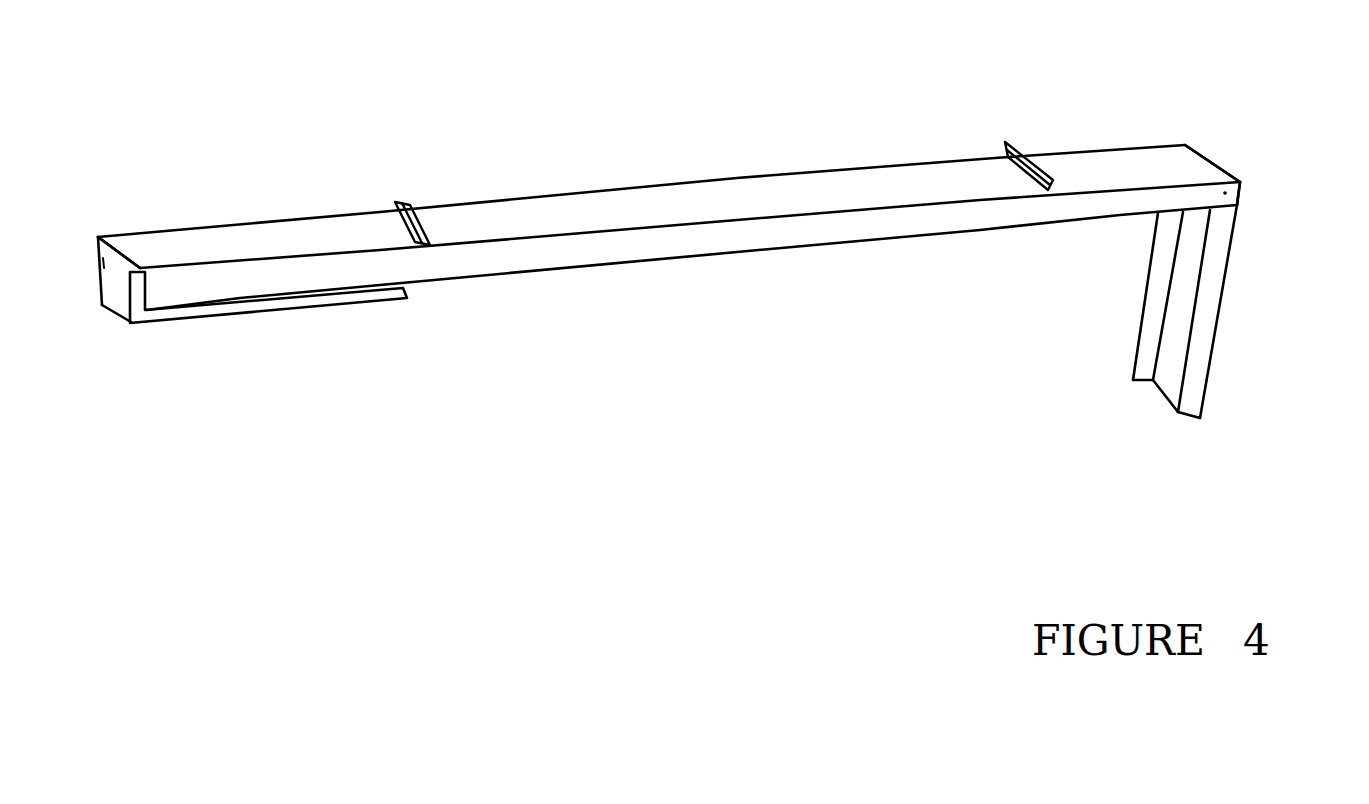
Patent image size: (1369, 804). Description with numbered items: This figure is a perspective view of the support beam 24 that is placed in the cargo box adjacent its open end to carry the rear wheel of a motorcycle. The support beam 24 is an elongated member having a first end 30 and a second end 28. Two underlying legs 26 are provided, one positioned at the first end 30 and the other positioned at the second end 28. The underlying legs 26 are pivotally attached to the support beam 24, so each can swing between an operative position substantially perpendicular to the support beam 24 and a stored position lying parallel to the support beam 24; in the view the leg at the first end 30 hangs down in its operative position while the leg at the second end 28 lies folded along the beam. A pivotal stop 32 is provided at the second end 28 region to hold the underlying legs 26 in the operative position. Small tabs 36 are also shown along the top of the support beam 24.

The support beam 24 is at (698, 241).
The underlying legs 26 is at (222, 322).
The second end 28 is at (125, 250).
The first end 30 is at (1207, 162).
The pivotal stop 32 is at (133, 295).
The tab 36 is at (397, 200).